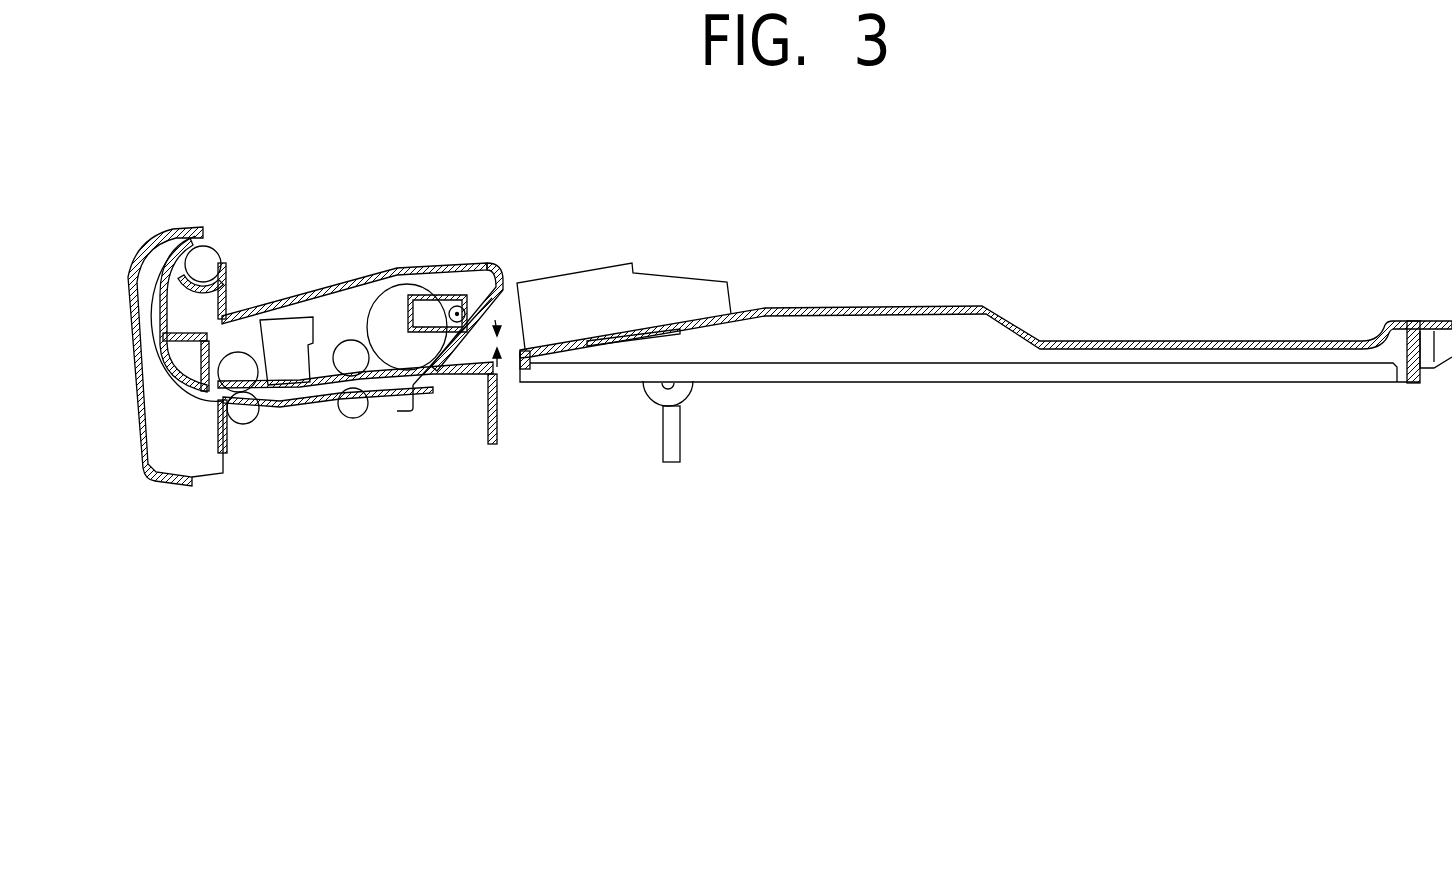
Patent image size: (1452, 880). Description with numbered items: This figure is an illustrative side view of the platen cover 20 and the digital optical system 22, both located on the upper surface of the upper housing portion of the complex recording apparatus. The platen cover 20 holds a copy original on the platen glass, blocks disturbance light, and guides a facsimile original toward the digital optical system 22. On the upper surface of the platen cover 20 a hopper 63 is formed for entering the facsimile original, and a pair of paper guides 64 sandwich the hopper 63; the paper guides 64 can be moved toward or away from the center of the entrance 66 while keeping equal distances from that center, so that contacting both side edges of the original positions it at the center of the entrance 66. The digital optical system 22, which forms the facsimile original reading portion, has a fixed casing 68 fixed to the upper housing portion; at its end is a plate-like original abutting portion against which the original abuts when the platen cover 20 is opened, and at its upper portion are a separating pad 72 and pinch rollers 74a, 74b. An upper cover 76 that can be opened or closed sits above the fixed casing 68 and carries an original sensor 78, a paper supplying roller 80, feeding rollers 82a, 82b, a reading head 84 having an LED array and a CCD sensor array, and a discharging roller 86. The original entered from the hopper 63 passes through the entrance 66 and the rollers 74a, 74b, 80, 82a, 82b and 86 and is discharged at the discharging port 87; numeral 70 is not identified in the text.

The platen cover 20 is at (884, 238).
The digital optical system 22 is at (355, 156).
The hopper 63 is at (498, 315).
The paper guides 64 is at (598, 278).
The entrance 66 is at (500, 398).
The fixed casing 68 is at (297, 403).
The post 70 is at (498, 442).
The separating pad 72 is at (462, 386).
The pinch roller 74a is at (373, 413).
The pinch roller 74b is at (245, 424).
The upper cover 76 is at (347, 340).
The original sensor 78 is at (483, 270).
The paper supplying roller 80 is at (413, 275).
The feeding roller 82a is at (365, 285).
The feeding roller 82b is at (237, 349).
The reading head 84 is at (293, 327).
The discharging roller 86 is at (208, 250).
The discharging port 87 is at (211, 224).